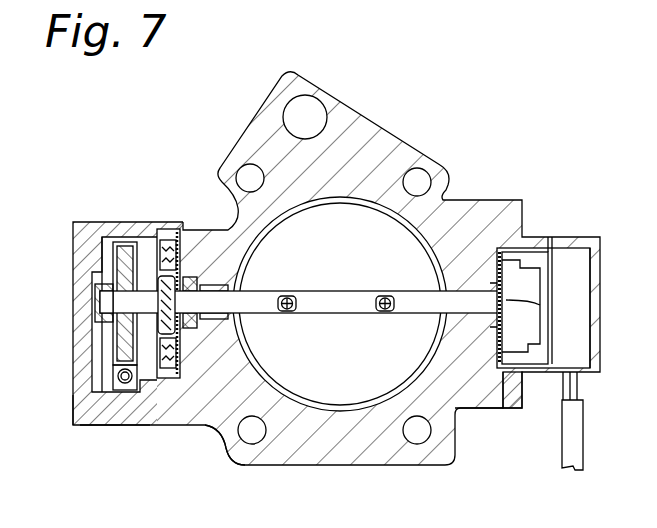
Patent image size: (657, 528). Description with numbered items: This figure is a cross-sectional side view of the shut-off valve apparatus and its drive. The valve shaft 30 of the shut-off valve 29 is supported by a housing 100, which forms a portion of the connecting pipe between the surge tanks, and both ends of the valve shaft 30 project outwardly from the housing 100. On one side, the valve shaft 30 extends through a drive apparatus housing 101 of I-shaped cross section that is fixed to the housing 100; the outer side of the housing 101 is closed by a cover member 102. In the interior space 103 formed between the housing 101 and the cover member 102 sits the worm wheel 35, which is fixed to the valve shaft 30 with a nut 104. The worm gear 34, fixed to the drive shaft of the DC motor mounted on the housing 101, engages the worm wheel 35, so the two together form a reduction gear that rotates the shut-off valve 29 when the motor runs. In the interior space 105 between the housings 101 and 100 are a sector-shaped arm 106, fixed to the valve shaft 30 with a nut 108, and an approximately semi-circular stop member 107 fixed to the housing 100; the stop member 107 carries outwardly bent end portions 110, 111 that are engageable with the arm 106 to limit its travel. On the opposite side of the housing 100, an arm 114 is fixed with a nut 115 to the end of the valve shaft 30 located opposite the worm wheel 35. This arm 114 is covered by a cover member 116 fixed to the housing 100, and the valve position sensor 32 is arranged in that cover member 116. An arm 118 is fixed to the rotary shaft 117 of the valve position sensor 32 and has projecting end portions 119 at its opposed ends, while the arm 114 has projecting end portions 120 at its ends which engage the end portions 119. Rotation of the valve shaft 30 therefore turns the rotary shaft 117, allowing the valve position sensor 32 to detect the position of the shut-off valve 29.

The housing 100 is at (347, 468).
The shut-off valve 29 is at (365, 212).
The valve shaft 30 is at (422, 293).
The valve position sensor 32 is at (583, 253).
The worm gear 34 is at (118, 378).
The worm wheel 35 is at (100, 258).
The drive apparatus housing 101 is at (98, 430).
The cover member 102 is at (80, 413).
The interior space 103 is at (98, 325).
The nut 104 is at (100, 292).
The interior space 105 is at (110, 222).
The arm 106 is at (200, 365).
The stop member 107 is at (185, 258).
The nut 108 is at (135, 352).
The end portion 110 is at (160, 250).
The end portion 111 is at (136, 436).
The arm 114 is at (522, 378).
The nut 115 is at (510, 318).
The cover member 116 is at (595, 350).
The rotary shaft 117 is at (550, 298).
The arm 118 is at (547, 280).
The projecting end portions 119 is at (538, 260).
The projecting end portions 120 is at (502, 255).